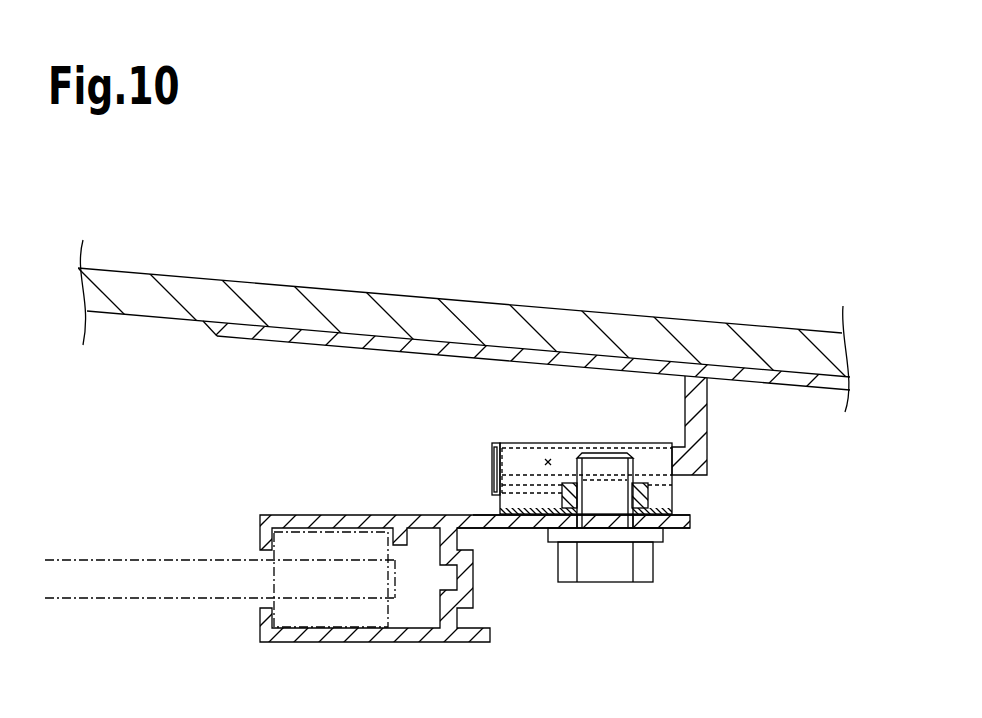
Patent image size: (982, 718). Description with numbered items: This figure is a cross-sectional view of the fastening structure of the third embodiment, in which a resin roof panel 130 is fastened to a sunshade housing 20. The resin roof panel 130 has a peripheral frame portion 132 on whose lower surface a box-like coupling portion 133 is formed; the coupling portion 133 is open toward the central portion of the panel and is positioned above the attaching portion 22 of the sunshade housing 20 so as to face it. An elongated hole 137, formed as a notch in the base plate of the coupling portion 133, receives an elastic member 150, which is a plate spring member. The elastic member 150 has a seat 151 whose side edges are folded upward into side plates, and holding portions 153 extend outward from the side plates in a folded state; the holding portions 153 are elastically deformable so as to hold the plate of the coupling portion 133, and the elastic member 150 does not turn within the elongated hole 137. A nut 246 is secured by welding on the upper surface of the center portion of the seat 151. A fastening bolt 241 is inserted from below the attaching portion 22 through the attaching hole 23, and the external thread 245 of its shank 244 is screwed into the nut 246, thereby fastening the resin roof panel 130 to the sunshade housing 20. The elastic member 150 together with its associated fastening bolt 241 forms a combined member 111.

The resin roof panel 130 is at (341, 286).
The peripheral frame portion 132 is at (397, 342).
The coupling portion 133 is at (711, 448).
The sunshade housing 20 is at (301, 511).
The attaching portion 22 is at (480, 515).
The attaching hole 23 is at (600, 522).
The elastic member 150 is at (498, 436).
The seat 151 is at (520, 508).
The elongated hole 137 is at (548, 458).
The shank 244 is at (602, 465).
The external thread 245 is at (562, 498).
The nut 246 is at (647, 492).
The fastening bolt 241 is at (609, 587).
The combined member 111 is at (592, 587).
The holding portion 153 is at (590, 482).